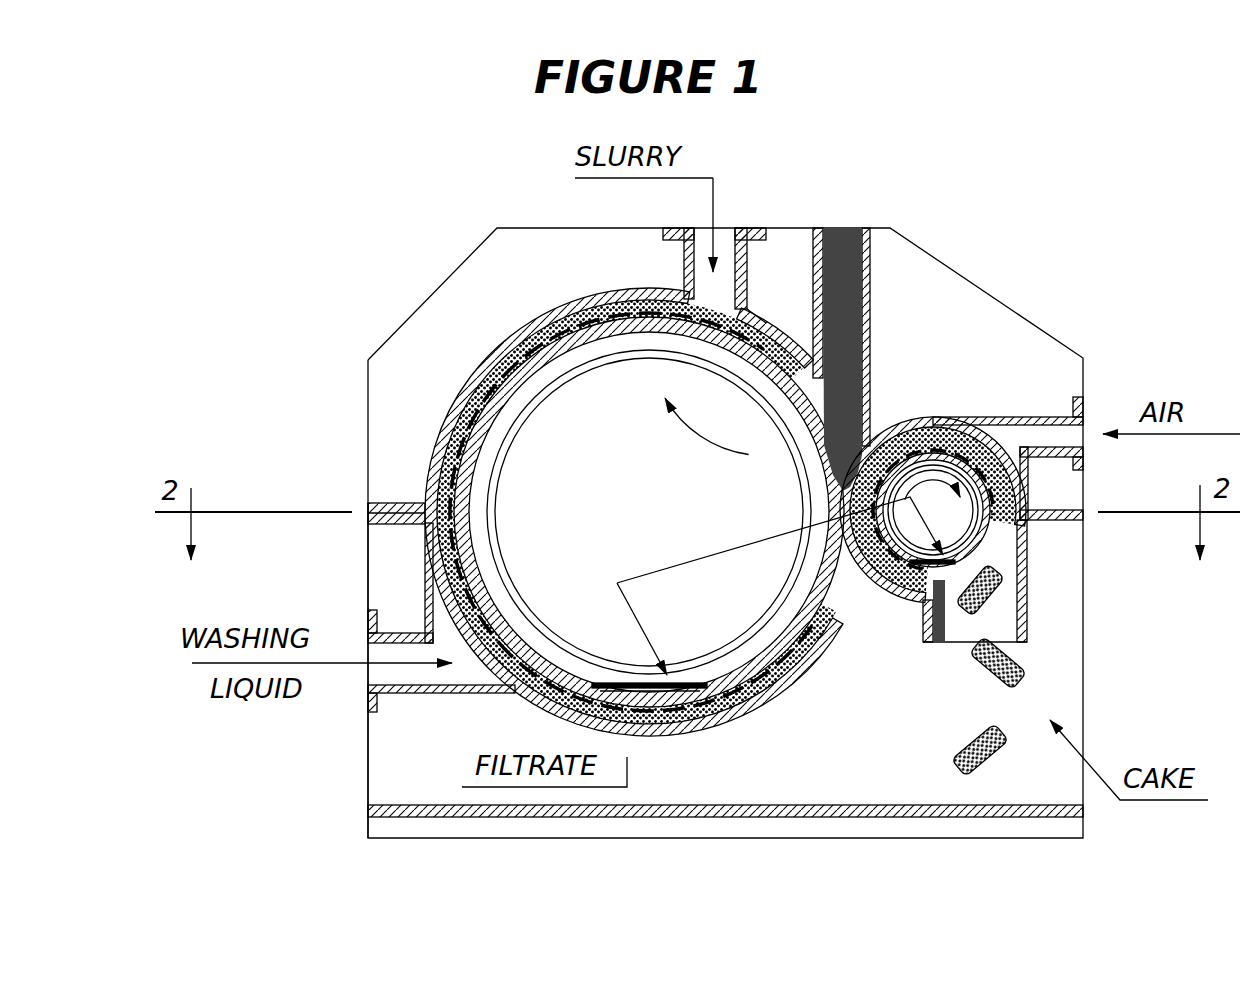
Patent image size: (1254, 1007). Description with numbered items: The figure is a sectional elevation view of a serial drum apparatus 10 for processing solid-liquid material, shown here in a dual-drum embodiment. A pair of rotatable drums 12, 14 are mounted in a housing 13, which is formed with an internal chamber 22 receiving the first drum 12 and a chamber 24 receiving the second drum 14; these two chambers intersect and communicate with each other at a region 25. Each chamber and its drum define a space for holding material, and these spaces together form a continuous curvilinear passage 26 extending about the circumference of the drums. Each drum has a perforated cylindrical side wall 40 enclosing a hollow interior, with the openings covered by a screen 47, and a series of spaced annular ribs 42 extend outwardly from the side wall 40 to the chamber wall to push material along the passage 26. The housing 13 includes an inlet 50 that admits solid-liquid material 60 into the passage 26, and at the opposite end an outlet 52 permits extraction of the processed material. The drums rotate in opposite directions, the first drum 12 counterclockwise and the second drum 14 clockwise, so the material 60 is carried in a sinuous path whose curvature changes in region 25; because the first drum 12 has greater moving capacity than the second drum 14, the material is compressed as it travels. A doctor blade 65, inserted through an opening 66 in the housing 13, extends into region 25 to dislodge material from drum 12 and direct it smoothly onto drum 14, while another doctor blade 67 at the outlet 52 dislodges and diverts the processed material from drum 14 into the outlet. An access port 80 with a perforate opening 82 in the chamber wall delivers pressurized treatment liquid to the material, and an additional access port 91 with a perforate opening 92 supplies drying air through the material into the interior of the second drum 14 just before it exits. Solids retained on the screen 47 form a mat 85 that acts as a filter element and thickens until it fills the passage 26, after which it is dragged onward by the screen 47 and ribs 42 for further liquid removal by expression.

The serial drum apparatus 10 is at (437, 243).
The first drum 12 is at (527, 628).
The housing 13 is at (368, 458).
The second drum 14 is at (955, 458).
The internal chamber 22 is at (452, 430).
The chamber 24 is at (893, 593).
The region 25 is at (860, 580).
The curvilinear passage 26 is at (597, 310).
The cylindrical side wall 40 is at (617, 583).
The annular ribs 42 is at (751, 331).
The screen 47 is at (517, 683).
The inlet 50 is at (729, 225).
The outlet 52 is at (1028, 658).
The solid-liquid material 60 is at (694, 225).
The doctor blade 65 is at (840, 330).
The opening 66 is at (849, 216).
The doctor blade 67 is at (937, 645).
The access port 80 is at (348, 700).
The perforate opening 82 is at (450, 595).
The mat 85 is at (498, 367).
The access port 91 is at (1048, 432).
The perforate opening 92 is at (997, 443).